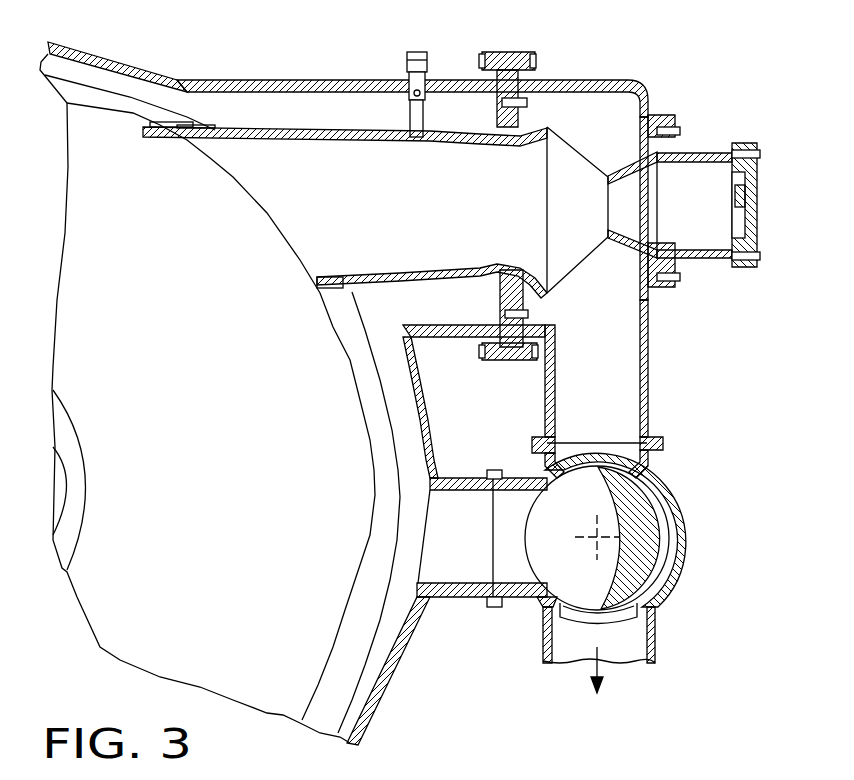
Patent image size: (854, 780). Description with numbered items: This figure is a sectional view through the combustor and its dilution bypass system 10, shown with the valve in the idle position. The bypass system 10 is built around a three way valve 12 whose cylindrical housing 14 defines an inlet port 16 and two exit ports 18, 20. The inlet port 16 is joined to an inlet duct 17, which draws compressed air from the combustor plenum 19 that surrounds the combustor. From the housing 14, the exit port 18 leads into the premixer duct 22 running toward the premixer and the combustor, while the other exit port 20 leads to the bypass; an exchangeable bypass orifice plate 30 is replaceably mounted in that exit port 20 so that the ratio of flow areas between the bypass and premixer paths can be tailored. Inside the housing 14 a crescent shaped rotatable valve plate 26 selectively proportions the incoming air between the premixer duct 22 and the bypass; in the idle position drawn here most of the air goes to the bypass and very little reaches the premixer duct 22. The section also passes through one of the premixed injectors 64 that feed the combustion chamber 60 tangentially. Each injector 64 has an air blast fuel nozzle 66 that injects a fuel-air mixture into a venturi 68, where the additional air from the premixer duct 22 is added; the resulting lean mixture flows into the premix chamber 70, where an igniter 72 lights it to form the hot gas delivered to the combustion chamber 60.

The bypass system 10 is at (733, 643).
The three way valve 12 is at (683, 471).
The cylindrical housing 14 is at (685, 543).
The inlet port 16 is at (513, 517).
The inlet duct 17 is at (457, 577).
The exit port 18 is at (623, 453).
The combustor plenum 19 is at (387, 677).
The exit port 20 is at (635, 640).
The premixer duct 22 is at (617, 345).
The rotatable valve plate 26 is at (652, 520).
The bypass orifice plate 30 is at (562, 607).
The combustion chamber 60 is at (154, 194).
The premixed injector 64 is at (717, 107).
The air blast fuel nozzle 66 is at (698, 180).
The venturi 68 is at (572, 173).
The premix chamber 70 is at (434, 199).
The igniter 72 is at (417, 50).